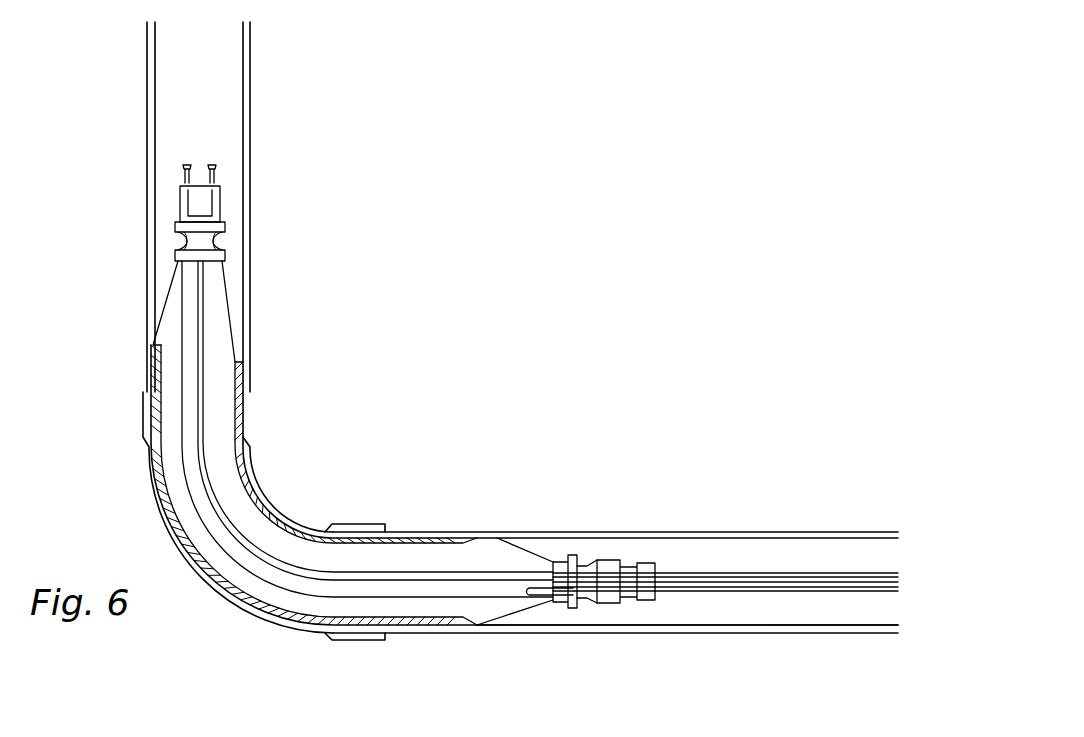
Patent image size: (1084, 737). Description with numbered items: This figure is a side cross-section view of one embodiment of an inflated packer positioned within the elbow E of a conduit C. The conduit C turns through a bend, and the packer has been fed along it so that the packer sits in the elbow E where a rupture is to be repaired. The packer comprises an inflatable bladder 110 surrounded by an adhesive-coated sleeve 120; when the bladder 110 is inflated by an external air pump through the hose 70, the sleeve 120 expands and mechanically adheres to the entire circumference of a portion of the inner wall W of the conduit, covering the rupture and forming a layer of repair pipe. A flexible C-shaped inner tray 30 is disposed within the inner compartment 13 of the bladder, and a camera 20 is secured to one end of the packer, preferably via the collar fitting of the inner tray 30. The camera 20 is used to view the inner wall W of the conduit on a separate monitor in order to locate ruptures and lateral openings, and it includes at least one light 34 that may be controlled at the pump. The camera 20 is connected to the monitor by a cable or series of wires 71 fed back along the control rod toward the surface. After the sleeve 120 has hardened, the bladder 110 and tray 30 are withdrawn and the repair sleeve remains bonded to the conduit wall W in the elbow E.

The conduit C is at (217, 115).
The inner wall of the conduit W is at (788, 537).
The elbow E is at (304, 474).
The inner compartment 13 is at (165, 343).
The camera 20 is at (192, 203).
The inner tray 30 is at (477, 597).
The light 34 is at (181, 168).
The hose 70 is at (578, 556).
The cable or wires 71 is at (198, 325).
The inflatable bladder 110 is at (517, 545).
The adhesive-coated sleeve 120 is at (288, 516).